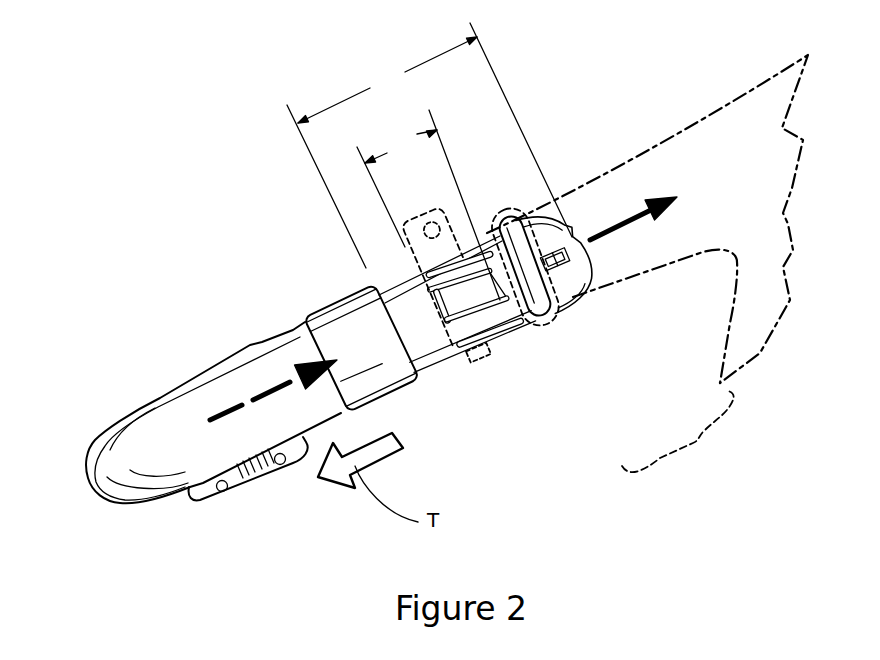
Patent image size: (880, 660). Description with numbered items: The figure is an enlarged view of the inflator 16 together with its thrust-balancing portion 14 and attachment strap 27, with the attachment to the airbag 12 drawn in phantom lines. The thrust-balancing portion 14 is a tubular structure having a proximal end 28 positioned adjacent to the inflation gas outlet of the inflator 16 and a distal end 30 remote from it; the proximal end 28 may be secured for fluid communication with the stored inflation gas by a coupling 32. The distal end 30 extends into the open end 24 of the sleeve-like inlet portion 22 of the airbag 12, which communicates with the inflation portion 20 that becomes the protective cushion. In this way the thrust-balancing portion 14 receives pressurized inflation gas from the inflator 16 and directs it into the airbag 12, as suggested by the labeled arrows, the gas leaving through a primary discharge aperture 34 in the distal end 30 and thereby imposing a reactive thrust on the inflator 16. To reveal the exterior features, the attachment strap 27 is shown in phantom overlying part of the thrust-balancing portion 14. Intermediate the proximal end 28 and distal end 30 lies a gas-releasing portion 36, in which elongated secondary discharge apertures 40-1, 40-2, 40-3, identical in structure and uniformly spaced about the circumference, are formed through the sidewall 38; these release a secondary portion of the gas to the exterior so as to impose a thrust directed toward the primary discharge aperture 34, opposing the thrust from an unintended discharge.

The inflated curtain airbag 12 is at (647, 264).
The thrust-balancing portion 14 is at (429, 145).
The inflator 16 is at (180, 428).
The inflation portion 20 is at (730, 257).
The inlet portion 22 is at (570, 305).
The open end 24 is at (433, 298).
The attachment strap 27 is at (414, 240).
The proximal end 28 is at (400, 298).
The distal end 30 is at (512, 238).
The coupling 32 is at (332, 325).
The primary discharge aperture 34 is at (572, 242).
The gas-releasing portion 36 is at (428, 205).
The sidewall 38 is at (405, 332).
The secondary discharge aperture 40-1 is at (480, 268).
The secondary discharge aperture 40-2 is at (477, 298).
The secondary discharge aperture 40-3 is at (485, 347).